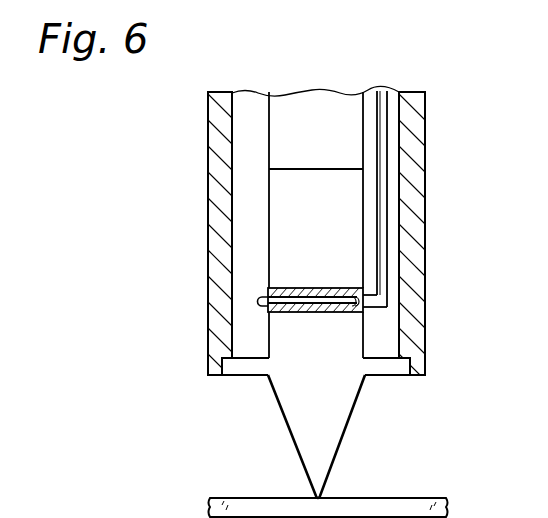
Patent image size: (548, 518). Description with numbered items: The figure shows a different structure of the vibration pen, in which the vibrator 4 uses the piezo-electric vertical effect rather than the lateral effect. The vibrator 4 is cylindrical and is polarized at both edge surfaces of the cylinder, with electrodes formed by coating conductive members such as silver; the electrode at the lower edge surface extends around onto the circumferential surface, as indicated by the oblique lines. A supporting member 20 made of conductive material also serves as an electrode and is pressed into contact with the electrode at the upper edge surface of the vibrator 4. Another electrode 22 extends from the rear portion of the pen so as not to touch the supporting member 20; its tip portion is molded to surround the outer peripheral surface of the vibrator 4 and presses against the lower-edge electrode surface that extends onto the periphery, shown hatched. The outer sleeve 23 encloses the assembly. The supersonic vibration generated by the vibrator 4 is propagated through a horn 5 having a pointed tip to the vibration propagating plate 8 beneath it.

The supporting member 20 is at (322, 96).
The electrode 22 is at (382, 91).
The vibrator 4 is at (348, 188).
The outer wall 23 is at (425, 162).
The horn 5 is at (355, 411).
The vibration propagating plate 8 is at (405, 498).